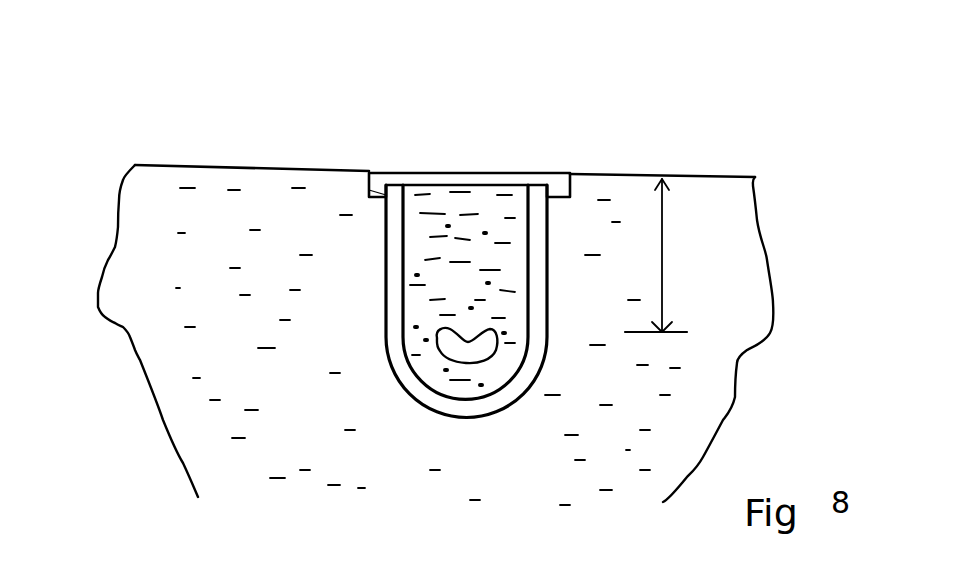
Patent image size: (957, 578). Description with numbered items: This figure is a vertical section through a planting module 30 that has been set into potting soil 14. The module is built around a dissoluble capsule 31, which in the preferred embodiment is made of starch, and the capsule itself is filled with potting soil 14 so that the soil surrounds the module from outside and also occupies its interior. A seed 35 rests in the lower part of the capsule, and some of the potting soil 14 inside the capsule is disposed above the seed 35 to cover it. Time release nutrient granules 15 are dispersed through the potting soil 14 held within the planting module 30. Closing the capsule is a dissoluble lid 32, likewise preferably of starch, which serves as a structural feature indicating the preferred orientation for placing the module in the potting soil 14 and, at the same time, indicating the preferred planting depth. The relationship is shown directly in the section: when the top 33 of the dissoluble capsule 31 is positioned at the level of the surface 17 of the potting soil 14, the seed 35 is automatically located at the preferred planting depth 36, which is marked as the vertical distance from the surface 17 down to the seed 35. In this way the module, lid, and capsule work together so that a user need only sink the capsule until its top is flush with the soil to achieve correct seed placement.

The potting soil 14 is at (325, 443).
The time release nutrient granules 15 is at (420, 247).
The surface 17 is at (227, 167).
The planting module 30 is at (390, 107).
The dissoluble capsule 31 is at (548, 285).
The dissoluble lid 32 is at (367, 183).
The top 33 is at (453, 173).
The seed 35 is at (482, 347).
The preferred planting depth 36 is at (662, 247).